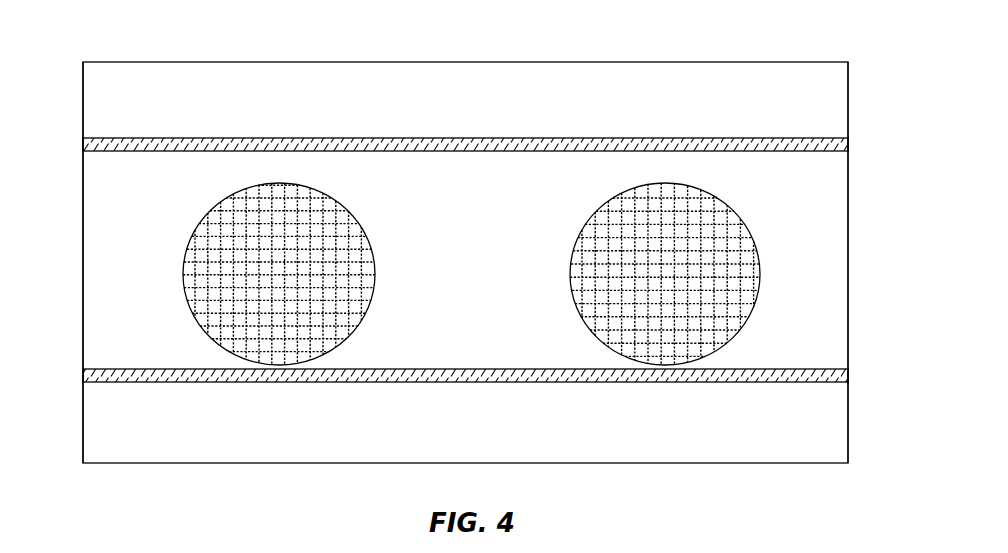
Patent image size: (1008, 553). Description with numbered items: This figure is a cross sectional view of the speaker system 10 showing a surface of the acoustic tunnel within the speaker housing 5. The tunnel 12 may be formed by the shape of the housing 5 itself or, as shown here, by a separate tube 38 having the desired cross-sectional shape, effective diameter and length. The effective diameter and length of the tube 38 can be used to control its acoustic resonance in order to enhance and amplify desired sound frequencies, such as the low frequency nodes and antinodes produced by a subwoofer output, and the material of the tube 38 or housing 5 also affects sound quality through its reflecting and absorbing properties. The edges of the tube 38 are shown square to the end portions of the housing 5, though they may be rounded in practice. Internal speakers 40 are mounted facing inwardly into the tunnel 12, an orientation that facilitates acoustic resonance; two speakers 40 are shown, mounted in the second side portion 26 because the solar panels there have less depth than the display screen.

The fiber-reinforced composite structure 10 is at (196, 38).
The housing 5 is at (794, 62).
The second side portion 26 is at (83, 228).
The tunnel 12 is at (818, 251).
The tube 38 is at (818, 138).
The internal speakers 40 is at (373, 236).